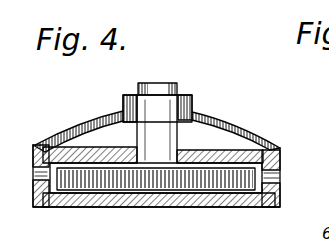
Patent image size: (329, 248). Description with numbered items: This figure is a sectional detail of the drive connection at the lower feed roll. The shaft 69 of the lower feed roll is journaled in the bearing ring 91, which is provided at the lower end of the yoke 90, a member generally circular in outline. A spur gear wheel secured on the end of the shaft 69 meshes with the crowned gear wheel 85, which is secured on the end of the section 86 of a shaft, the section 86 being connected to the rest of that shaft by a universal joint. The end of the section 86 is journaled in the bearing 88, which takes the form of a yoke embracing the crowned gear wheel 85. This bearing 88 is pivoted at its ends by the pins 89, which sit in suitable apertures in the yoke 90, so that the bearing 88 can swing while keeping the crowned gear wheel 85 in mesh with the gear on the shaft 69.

The shaft 69 is at (162, 84).
The bearing ring 91 is at (131, 96).
The section of shaft 86 is at (192, 113).
The yoke 90 is at (276, 149).
The pins 89 is at (277, 174).
The crowned gear wheel 85 is at (110, 188).
The bearing 88 is at (204, 197).